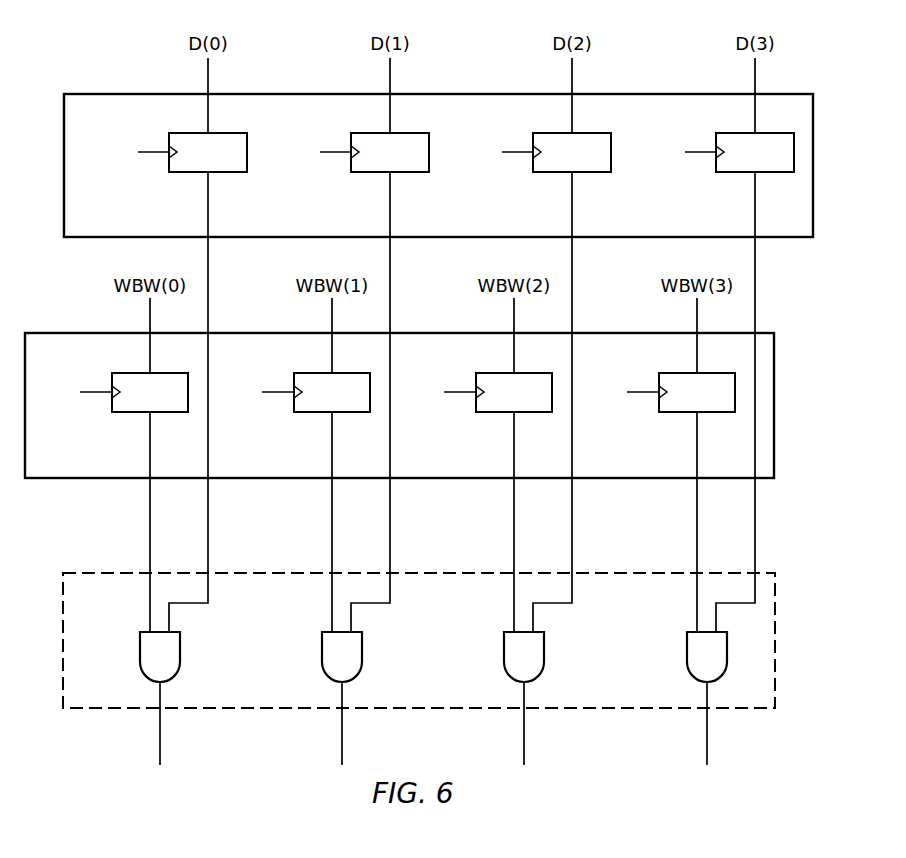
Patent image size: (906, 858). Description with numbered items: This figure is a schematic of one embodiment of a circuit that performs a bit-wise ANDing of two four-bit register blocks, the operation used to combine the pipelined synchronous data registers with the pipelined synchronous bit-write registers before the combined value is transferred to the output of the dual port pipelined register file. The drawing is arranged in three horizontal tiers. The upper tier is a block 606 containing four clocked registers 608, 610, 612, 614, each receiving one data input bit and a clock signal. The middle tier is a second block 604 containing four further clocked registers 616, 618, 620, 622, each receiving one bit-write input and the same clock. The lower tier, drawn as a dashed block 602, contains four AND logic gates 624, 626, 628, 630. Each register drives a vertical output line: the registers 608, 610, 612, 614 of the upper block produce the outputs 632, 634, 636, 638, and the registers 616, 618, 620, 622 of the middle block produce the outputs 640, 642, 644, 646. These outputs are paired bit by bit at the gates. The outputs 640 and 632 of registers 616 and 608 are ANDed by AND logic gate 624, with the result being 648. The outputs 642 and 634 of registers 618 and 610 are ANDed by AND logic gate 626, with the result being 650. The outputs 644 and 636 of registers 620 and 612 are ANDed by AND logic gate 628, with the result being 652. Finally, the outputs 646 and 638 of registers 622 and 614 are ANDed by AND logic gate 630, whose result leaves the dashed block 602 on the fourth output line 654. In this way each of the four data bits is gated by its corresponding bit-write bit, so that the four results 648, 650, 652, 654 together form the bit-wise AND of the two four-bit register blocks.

The masking logic block (AND gate array) 602 is at (643, 709).
The write byte enable register stage 604 is at (65, 332).
The data register stage 606 is at (123, 93).
The register 608 is at (188, 172).
The register 610 is at (370, 172).
The register 612 is at (552, 172).
The register 614 is at (735, 172).
The register 616 is at (130, 412).
The register 618 is at (312, 412).
The register 620 is at (494, 412).
The register 622 is at (677, 412).
The AND logic gate 624 is at (139, 655).
The AND logic gate 626 is at (321, 655).
The AND logic gate 628 is at (503, 655).
The AND logic gate 630 is at (686, 655).
The output 632 is at (209, 530).
The output 634 is at (391, 530).
The output 636 is at (573, 530).
The output 638 is at (756, 530).
The output 640 is at (148, 527).
The output 642 is at (331, 520).
The output 644 is at (513, 520).
The output 646 is at (696, 520).
The result 648 is at (159, 737).
The result 650 is at (341, 737).
The result 652 is at (525, 735).
The masked data output 654 is at (708, 735).